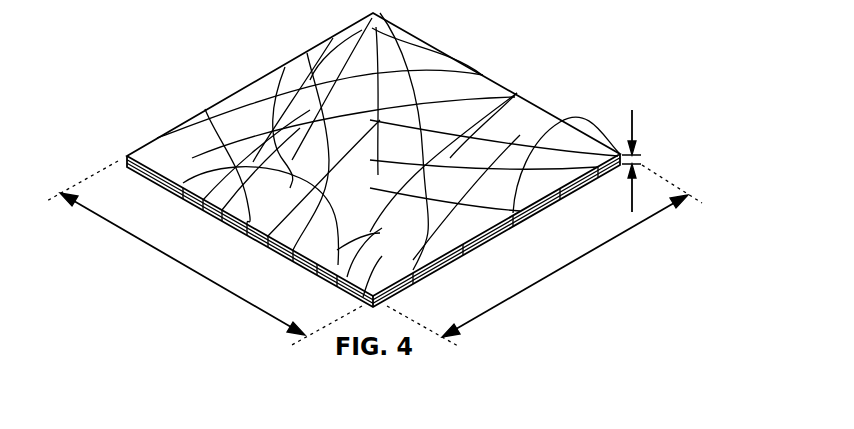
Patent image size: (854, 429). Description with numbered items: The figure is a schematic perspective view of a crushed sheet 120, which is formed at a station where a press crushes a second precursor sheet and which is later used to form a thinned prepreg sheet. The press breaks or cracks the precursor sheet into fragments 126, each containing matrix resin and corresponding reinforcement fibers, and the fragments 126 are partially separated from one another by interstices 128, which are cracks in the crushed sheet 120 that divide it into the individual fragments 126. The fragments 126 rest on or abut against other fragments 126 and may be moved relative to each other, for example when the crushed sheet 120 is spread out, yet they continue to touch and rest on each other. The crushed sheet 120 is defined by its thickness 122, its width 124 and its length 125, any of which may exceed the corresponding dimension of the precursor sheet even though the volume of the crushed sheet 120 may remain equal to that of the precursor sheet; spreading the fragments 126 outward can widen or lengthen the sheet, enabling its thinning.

The crushed sheet 120 is at (443, 32).
The thickness 122 is at (632, 128).
The width 124 is at (180, 264).
The length 125 is at (567, 263).
The fragments 126 is at (477, 98).
The interstices 128 is at (528, 114).